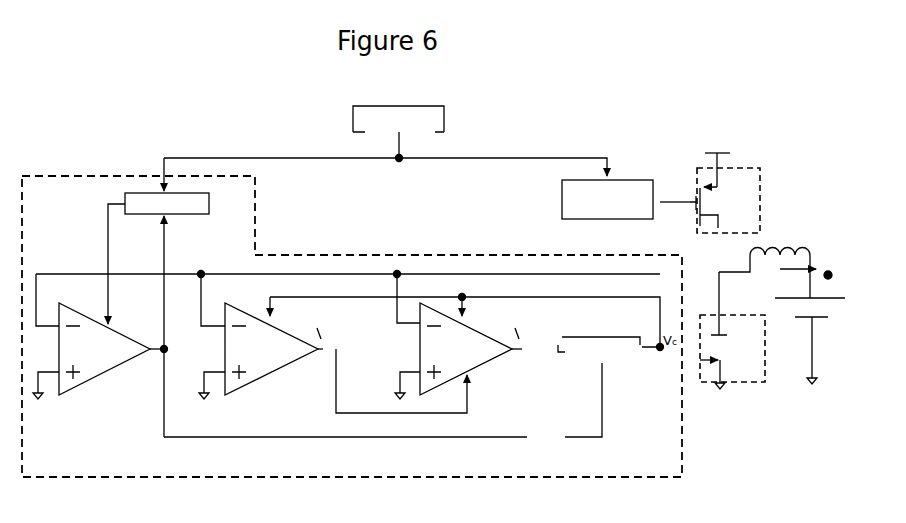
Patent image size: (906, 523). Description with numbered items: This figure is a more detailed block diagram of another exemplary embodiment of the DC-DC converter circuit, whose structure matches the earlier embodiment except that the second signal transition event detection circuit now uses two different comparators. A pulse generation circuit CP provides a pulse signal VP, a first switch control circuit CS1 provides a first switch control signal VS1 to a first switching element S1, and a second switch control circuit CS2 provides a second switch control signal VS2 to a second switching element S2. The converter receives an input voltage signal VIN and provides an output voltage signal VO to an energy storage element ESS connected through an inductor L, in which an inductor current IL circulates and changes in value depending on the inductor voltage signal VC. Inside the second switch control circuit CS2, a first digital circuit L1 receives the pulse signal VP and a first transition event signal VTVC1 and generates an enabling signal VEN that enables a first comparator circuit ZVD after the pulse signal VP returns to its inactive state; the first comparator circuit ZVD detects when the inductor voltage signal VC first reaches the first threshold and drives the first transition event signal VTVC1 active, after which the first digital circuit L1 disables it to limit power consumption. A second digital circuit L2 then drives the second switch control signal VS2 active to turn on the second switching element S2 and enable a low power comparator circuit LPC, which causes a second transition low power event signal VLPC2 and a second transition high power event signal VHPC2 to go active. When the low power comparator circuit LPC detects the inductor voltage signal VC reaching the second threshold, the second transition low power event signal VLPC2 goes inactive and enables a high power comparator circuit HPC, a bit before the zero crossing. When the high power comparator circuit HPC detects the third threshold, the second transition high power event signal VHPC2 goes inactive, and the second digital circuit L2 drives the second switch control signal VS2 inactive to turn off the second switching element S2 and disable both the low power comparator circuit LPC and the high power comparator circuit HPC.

The second switch control circuit CS2 is at (72, 174).
The first digital circuit L1 is at (167, 297).
The enabling signal VEN is at (96, 264).
The first comparator circuit ZVD is at (104, 349).
The low power comparator circuit LPC is at (271, 349).
The high power comparator circuit HPC is at (466, 349).
The second digital circuit L2 is at (599, 349).
The pulse generation circuit CP is at (398, 132).
The pulse signal VP is at (385, 158).
The first switch control circuit CS1 is at (626, 199).
The first switch control signal VS1 is at (685, 197).
The input voltage signal VIN is at (717, 145).
The first switching element S1 is at (725, 193).
The inductor voltage signal VC is at (727, 295).
The inductor L is at (780, 262).
The inductor current IL is at (798, 280).
The output voltage signal VO is at (843, 276).
The energy storage element ESS is at (818, 338).
The second switching element S2 is at (732, 349).
The second switch control signal VS2 is at (693, 357).
The first transition event signal VTVC1 is at (157, 358).
The second transition low power event signal VLPC2 is at (329, 357).
The second transition high power event signal VHPC2 is at (541, 357).